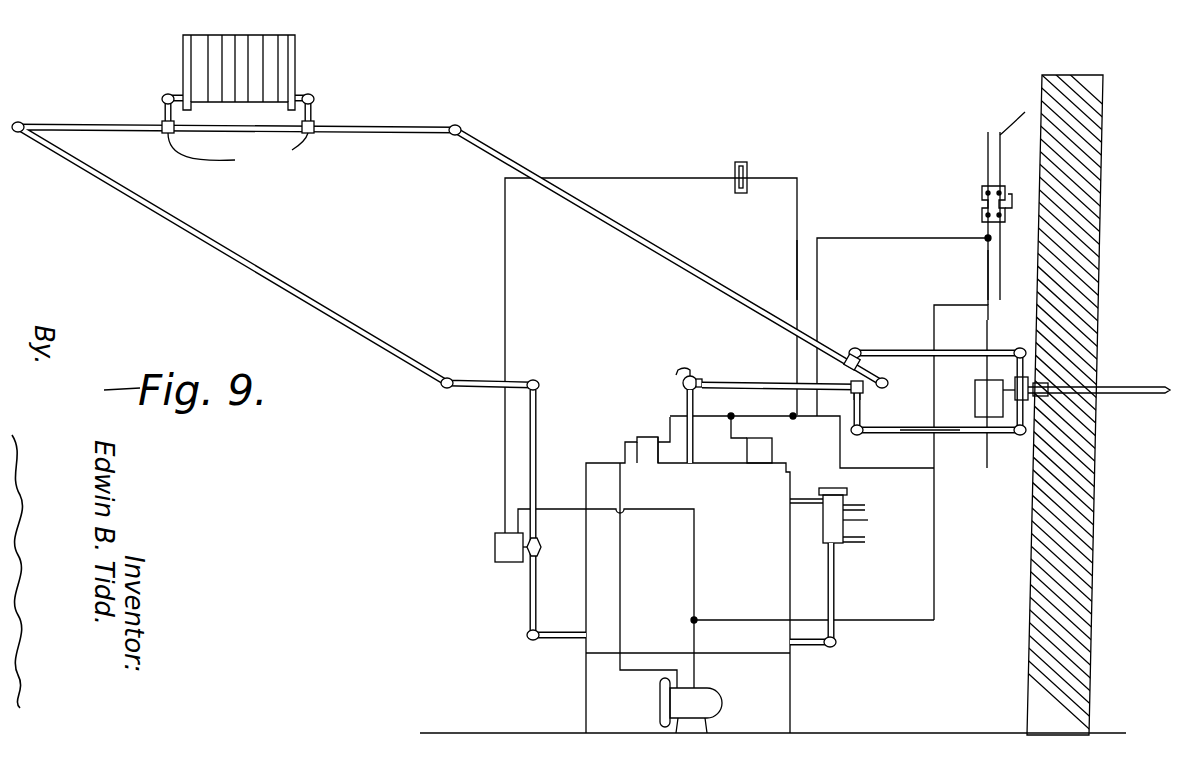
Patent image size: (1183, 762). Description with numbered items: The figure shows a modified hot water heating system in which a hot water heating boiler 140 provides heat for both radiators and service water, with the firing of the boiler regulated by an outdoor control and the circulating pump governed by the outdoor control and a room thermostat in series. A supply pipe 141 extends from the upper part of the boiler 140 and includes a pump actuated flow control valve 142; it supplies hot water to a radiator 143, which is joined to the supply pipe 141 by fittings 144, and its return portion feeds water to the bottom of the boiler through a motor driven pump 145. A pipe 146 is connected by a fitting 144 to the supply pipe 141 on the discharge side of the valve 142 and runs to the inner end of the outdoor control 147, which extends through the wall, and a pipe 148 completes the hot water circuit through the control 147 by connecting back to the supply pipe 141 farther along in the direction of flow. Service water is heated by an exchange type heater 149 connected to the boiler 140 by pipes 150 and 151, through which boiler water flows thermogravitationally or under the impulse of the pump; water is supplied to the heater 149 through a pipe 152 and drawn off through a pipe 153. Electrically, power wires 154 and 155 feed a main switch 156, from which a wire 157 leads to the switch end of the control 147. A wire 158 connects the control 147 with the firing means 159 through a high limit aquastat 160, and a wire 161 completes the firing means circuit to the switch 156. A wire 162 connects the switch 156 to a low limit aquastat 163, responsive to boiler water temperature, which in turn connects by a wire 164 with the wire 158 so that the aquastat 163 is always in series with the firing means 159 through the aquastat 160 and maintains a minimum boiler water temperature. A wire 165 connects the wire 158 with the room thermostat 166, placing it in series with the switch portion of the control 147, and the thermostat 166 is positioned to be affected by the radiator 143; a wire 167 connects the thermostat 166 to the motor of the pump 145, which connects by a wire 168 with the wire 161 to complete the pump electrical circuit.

The hot water heating boiler 140 is at (790, 689).
The supply pipe 141 is at (687, 401).
The pump actuated flow control valve 142 is at (697, 378).
The radiator 143 is at (297, 58).
The fittings 144 is at (857, 388).
The motor driven pump 145 is at (495, 548).
The pipe 146 is at (910, 433).
The outdoor control 147 is at (1102, 385).
The pipe 148 is at (872, 353).
The exchange type heater 149 is at (879, 519).
The pipe 150 is at (818, 515).
The pipe 151 is at (836, 587).
The pipe 152 is at (853, 545).
The pipe 153 is at (857, 500).
The power wire 154 is at (988, 150).
The power wire 155 is at (1009, 110).
The main switch 156 is at (982, 208).
The wire 157 is at (988, 264).
The wire 158 is at (976, 468).
The firing means 159 is at (712, 699).
The high limit aquastat 160 is at (638, 437).
The wire 161 is at (880, 624).
The wire 162 is at (860, 238).
The low limit aquastat 163 is at (772, 455).
The wire 164 is at (731, 418).
The wire 165 is at (797, 248).
The room thermostat 166 is at (747, 170).
The wire 167 is at (654, 178).
The wire 168 is at (672, 510).